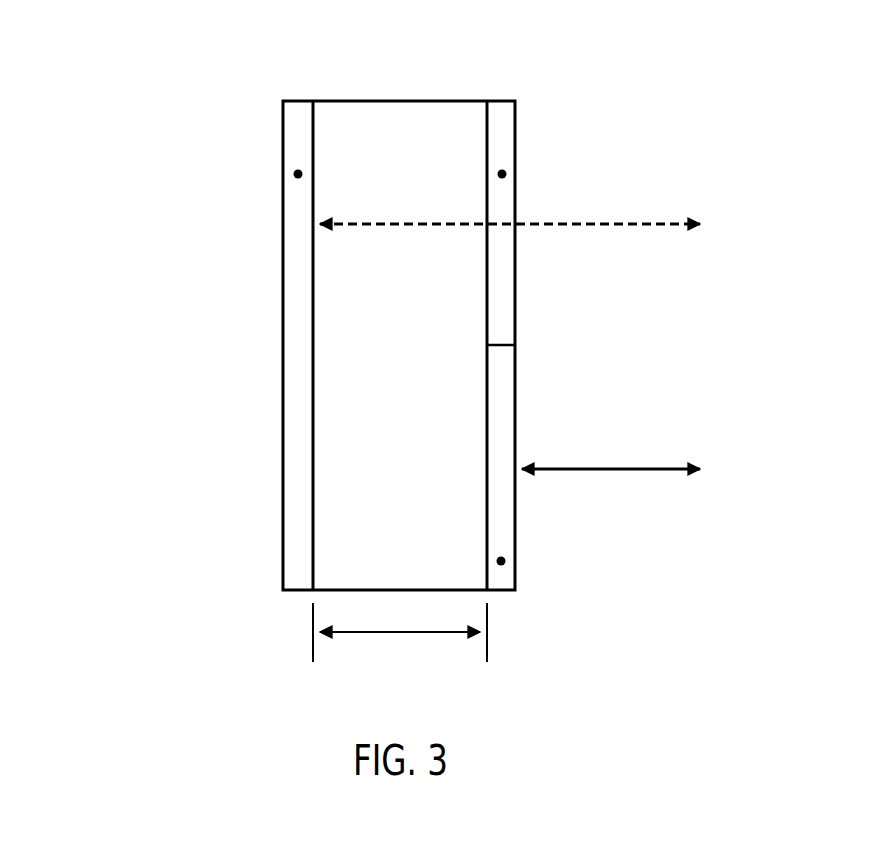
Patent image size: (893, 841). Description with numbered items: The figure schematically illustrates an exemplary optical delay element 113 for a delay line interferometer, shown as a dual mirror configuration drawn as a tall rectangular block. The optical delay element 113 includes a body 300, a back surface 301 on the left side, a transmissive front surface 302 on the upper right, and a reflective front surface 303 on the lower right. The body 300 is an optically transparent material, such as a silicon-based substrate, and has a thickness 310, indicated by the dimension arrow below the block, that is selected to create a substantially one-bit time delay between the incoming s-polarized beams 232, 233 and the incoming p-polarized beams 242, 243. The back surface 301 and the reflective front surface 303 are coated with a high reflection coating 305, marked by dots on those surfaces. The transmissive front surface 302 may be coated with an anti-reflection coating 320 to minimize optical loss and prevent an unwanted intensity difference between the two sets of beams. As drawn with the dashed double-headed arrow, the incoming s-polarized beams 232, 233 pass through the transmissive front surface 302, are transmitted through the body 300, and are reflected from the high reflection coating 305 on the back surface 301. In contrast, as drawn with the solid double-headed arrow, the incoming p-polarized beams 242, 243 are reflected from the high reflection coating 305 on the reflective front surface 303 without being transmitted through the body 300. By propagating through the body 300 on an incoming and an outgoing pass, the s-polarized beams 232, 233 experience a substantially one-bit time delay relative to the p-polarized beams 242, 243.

The optical delay element 113 is at (382, 376).
The body 300 is at (399, 345).
The back surface 301 is at (313, 343).
The transmissive front surface 302 is at (487, 183).
The reflective front surface 303 is at (487, 528).
The high reflection (HR) coating 305 is at (296, 174).
The thickness 310 is at (383, 633).
The anti-reflection (AR) coating 320 is at (504, 174).
The incoming s-polarized beam 232 is at (520, 193).
The incoming s-polarized beam 233 is at (588, 224).
The incoming p-polarized beam 242 is at (621, 437).
The incoming p-polarized beam 243 is at (585, 469).